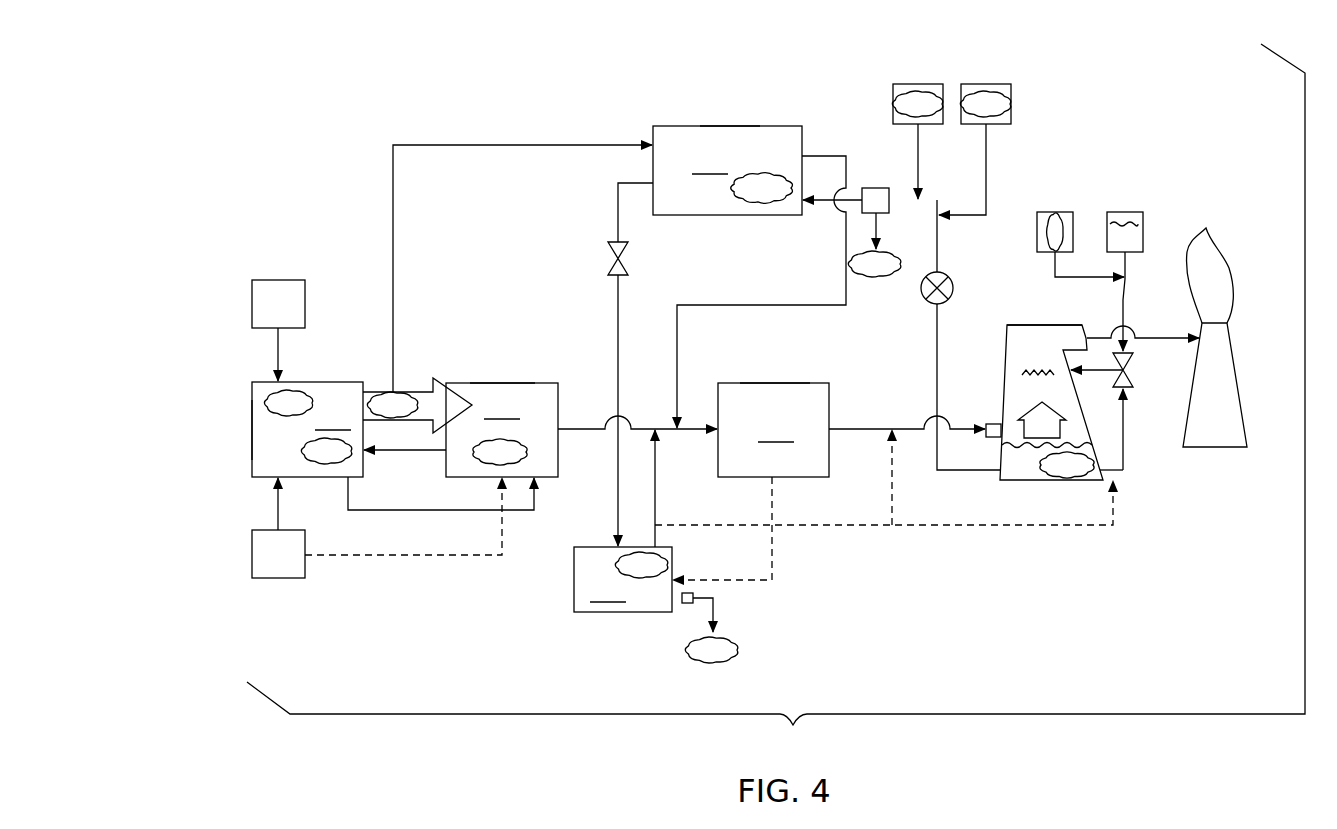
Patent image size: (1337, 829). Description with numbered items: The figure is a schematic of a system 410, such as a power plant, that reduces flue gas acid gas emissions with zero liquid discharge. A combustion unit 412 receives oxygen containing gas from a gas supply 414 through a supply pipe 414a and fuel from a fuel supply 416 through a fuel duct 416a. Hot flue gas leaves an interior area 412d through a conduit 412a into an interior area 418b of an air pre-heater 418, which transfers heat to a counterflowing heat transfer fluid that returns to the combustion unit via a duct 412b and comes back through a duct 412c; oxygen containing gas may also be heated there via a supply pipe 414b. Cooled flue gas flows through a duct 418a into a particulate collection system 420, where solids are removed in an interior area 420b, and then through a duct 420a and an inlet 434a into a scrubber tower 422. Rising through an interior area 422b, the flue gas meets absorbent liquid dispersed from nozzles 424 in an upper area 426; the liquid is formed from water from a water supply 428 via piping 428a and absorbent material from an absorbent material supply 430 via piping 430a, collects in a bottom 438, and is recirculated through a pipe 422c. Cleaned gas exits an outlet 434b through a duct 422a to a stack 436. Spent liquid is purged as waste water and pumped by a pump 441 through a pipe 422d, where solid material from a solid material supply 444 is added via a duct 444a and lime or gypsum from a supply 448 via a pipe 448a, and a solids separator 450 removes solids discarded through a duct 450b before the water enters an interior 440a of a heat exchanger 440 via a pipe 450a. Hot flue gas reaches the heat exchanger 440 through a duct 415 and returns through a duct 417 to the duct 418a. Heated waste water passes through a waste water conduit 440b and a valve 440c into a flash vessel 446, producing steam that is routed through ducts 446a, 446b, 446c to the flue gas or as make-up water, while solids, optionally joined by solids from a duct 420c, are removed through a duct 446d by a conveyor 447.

The system 410 is at (776, 401).
The combustion unit 412 is at (307, 429).
The conduit 412a is at (413, 391).
The duct 412b is at (403, 453).
The duct 412c is at (398, 513).
The interior area 412d is at (252, 428).
The gas supply 414 is at (295, 567).
The supply pipe 414a is at (278, 512).
The supply pipe 414b is at (402, 556).
The duct 415 is at (393, 225).
The fuel supply 416 is at (295, 317).
The fuel duct 416a is at (278, 350).
The duct 417 is at (760, 305).
The air pre-heater 418 is at (502, 430).
The duct 418a is at (633, 428).
The interior area 418b is at (502, 382).
The particulate collection system 420 is at (773, 430).
The duct 420a is at (862, 428).
The interior area 420b is at (773, 382).
The duct 420c is at (772, 551).
The scrubber tower 422 is at (1006, 324).
The duct 422a is at (1155, 336).
The interior area 422b is at (1080, 418).
The pipe 422c is at (1127, 453).
The pipe 422d is at (938, 238).
The nozzles 424 is at (1023, 363).
The upper area 426 is at (1030, 337).
The water supply 428 is at (1125, 211).
The piping 428a is at (1128, 265).
The absorbent material supply 430 is at (1055, 211).
The piping 430a is at (1058, 268).
The inlet 434a is at (986, 424).
The outlet 434b is at (1082, 331).
The stack 436 is at (1230, 392).
The bottom 438 is at (1018, 478).
The heat exchanger 440 is at (727, 170).
The interior 440a is at (728, 125).
The waste water conduit 440b is at (620, 283).
The valve 440c is at (608, 256).
The pump 441 is at (922, 289).
The solid material supply 444 is at (918, 83).
The duct 444a is at (918, 133).
The flash vessel 446 is at (623, 579).
The duct 446a is at (655, 497).
The duct 446b is at (892, 497).
The duct 446c is at (884, 534).
The duct 446d is at (713, 612).
The screw or pneumatic conveyor 447 is at (683, 601).
The lime and/or gypsum supply 448 is at (986, 83).
The pipe 448a is at (988, 158).
The solids separator 450 is at (876, 187).
The pipe 450a is at (827, 199).
The duct 450b is at (875, 227).